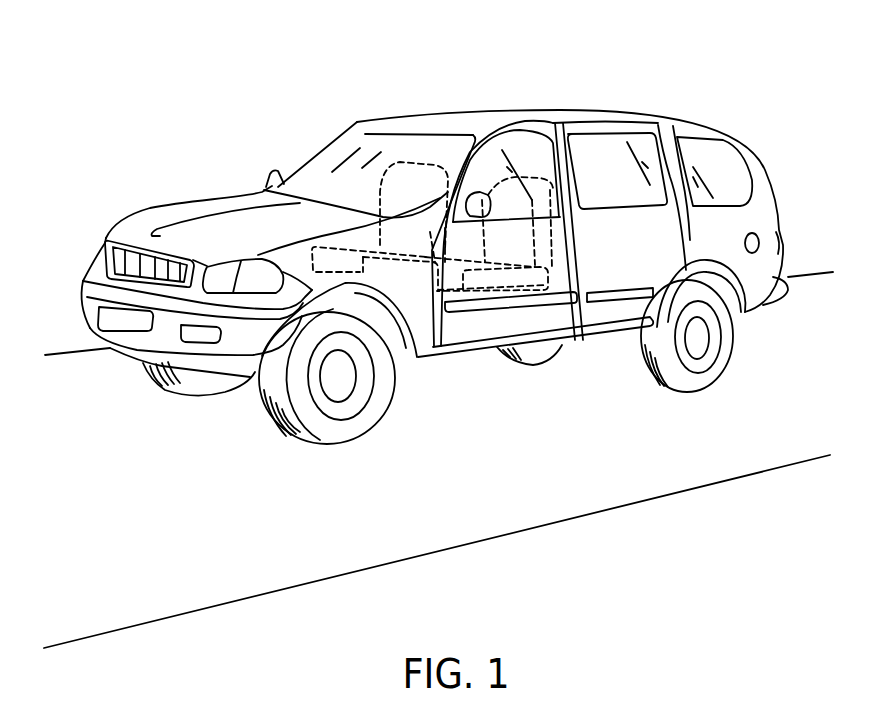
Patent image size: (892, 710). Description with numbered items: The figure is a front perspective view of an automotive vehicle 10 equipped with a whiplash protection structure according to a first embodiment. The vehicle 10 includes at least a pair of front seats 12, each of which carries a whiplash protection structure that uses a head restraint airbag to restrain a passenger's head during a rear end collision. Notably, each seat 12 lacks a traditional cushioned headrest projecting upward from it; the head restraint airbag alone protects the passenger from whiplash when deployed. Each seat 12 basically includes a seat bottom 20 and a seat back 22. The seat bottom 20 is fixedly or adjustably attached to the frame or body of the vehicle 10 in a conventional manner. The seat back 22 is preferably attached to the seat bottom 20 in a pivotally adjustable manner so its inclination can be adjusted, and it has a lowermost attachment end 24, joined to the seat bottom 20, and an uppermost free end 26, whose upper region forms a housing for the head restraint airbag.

The automotive vehicle 10 is at (606, 82).
The front seat 12 is at (353, 72).
The seat bottom 20 is at (323, 236).
The seat back 22 is at (375, 185).
The attachment end 24 is at (575, 296).
The free end 26 is at (568, 152).